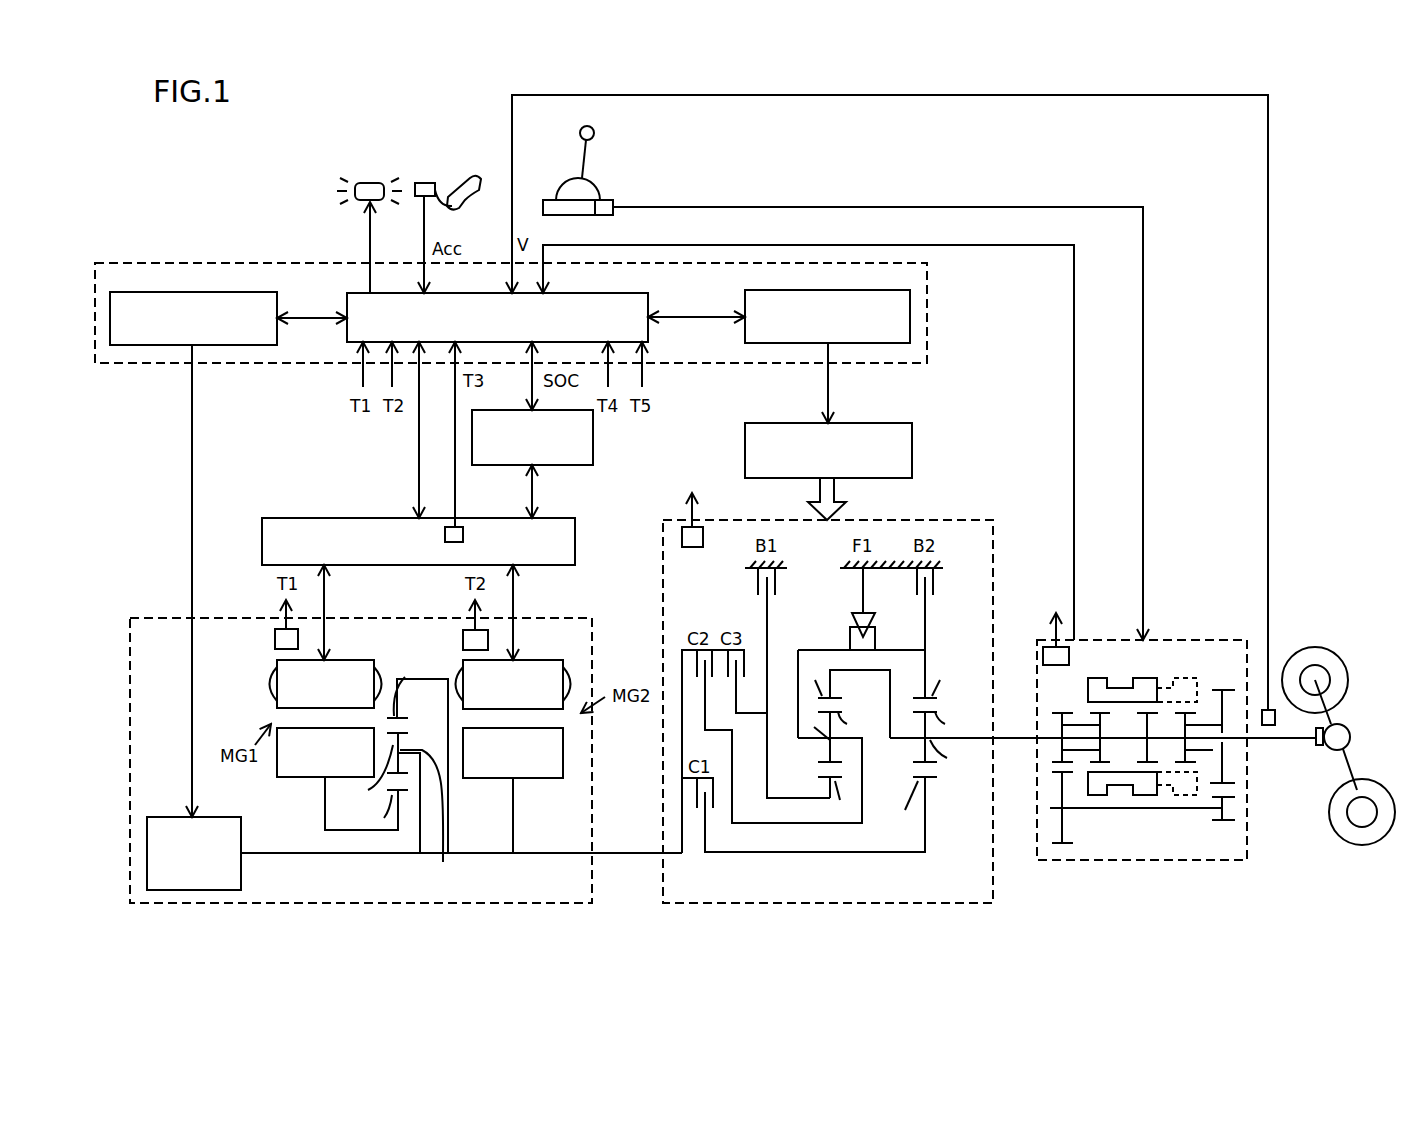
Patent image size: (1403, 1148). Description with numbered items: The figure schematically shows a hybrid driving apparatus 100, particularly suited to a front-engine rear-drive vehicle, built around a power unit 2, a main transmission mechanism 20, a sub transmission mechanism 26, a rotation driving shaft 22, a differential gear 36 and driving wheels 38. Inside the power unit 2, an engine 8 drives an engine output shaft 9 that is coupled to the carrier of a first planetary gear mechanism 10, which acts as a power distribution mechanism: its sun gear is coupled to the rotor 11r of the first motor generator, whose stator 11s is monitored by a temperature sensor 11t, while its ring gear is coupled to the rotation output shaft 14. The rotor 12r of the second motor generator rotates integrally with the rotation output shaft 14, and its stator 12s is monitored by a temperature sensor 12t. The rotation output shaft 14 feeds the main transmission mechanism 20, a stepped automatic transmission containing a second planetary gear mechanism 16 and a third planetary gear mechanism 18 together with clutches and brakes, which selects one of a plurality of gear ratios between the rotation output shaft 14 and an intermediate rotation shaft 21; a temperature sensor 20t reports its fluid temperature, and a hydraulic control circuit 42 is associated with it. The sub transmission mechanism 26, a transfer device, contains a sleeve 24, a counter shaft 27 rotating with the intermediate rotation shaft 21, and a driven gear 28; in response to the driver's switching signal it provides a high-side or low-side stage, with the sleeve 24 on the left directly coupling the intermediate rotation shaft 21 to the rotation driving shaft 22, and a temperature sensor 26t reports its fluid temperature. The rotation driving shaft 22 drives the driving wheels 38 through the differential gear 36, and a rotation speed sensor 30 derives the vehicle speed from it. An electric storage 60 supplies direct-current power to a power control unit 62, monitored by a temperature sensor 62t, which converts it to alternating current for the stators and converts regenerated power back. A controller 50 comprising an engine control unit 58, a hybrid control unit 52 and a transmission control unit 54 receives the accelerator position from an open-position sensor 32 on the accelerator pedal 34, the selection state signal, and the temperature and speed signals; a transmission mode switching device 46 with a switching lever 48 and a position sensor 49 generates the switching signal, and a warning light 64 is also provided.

The hybrid driving apparatus 100 is at (1385, 123).
The controller 50 is at (130, 263).
The engine control unit 58 is at (226, 293).
The hybrid control unit 52 is at (555, 293).
The transmission control unit 54 is at (870, 291).
The warning light 64 is at (367, 183).
The open-position sensor 32 is at (424, 183).
The accelerator pedal 34 is at (471, 207).
The transmission mode switching device 46 is at (609, 135).
The switching lever 48 is at (590, 165).
The position sensor 49 is at (611, 200).
The electric storage 60 is at (595, 437).
The power control unit 62 is at (550, 518).
The temperature sensor 62t is at (465, 537).
The hydraulic control circuit 42 is at (870, 423).
The main transmission mechanism 20 is at (950, 520).
The temperature sensor 20t is at (692, 547).
The power unit 2 is at (566, 618).
The engine 8 is at (228, 817).
The engine output shaft 9 is at (270, 856).
The rotation output shaft 14 is at (625, 856).
The temperature sensor 11t is at (275, 640).
The stator 11s is at (340, 660).
The rotor 11r is at (288, 777).
The temperature sensor 12t is at (463, 640).
The stator 12s is at (530, 660).
The rotor 12r is at (550, 778).
The first planetary gear mechanism 10 is at (419, 726).
The second planetary gear mechanism 16 is at (809, 745).
The third planetary gear mechanism 18 is at (904, 745).
The intermediate rotation shaft 21 is at (1010, 741).
The sub transmission mechanism 26 is at (1204, 640).
The temperature sensor 26t is at (1043, 656).
The sleeve 24 is at (1088, 692).
The counter shaft 27 is at (1165, 810).
The driven gear 28 is at (1225, 765).
The rotation speed sensor 30 is at (1268, 741).
The rotation driving shaft 22 is at (1300, 741).
The differential gear 36 is at (1350, 730).
The driving wheels 38 is at (1325, 648).